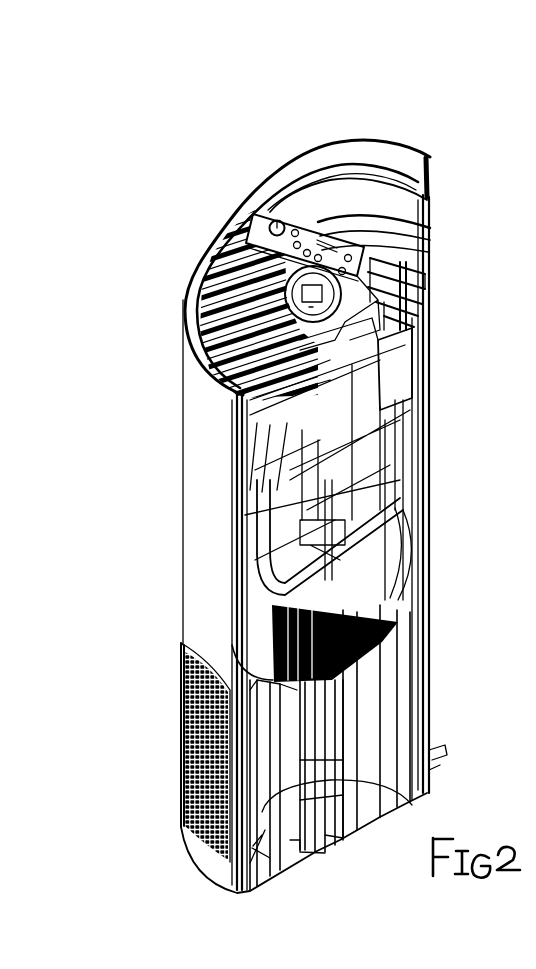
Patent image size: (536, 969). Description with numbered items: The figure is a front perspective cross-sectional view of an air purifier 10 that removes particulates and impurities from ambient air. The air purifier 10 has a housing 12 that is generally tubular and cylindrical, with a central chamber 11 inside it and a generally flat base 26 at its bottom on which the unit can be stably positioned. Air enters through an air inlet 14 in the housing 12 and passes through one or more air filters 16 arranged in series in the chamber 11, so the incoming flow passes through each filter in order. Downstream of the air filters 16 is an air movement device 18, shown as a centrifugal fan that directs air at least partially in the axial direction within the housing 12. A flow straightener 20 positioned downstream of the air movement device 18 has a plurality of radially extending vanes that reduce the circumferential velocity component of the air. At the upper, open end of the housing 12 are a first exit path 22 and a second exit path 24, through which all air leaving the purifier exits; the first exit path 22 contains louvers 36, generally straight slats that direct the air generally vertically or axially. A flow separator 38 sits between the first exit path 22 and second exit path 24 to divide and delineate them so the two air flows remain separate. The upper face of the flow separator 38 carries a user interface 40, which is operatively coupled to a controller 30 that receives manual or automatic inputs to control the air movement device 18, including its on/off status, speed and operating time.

The air purifier 10 is at (390, 80).
The central chamber 11 is at (418, 490).
The housing 12 is at (193, 492).
The air inlet 14 is at (182, 777).
The air filter 16 is at (275, 795).
The air movement device 18 is at (270, 620).
The flow straightener 20 is at (405, 367).
The first air flow exit path 22 is at (398, 259).
The second air flow exit path 24 is at (218, 262).
The base 26 is at (280, 872).
The controller 30 is at (278, 219).
The louvers 36 is at (188, 350).
The flow separator 38 is at (313, 228).
The user interface 40 is at (343, 245).